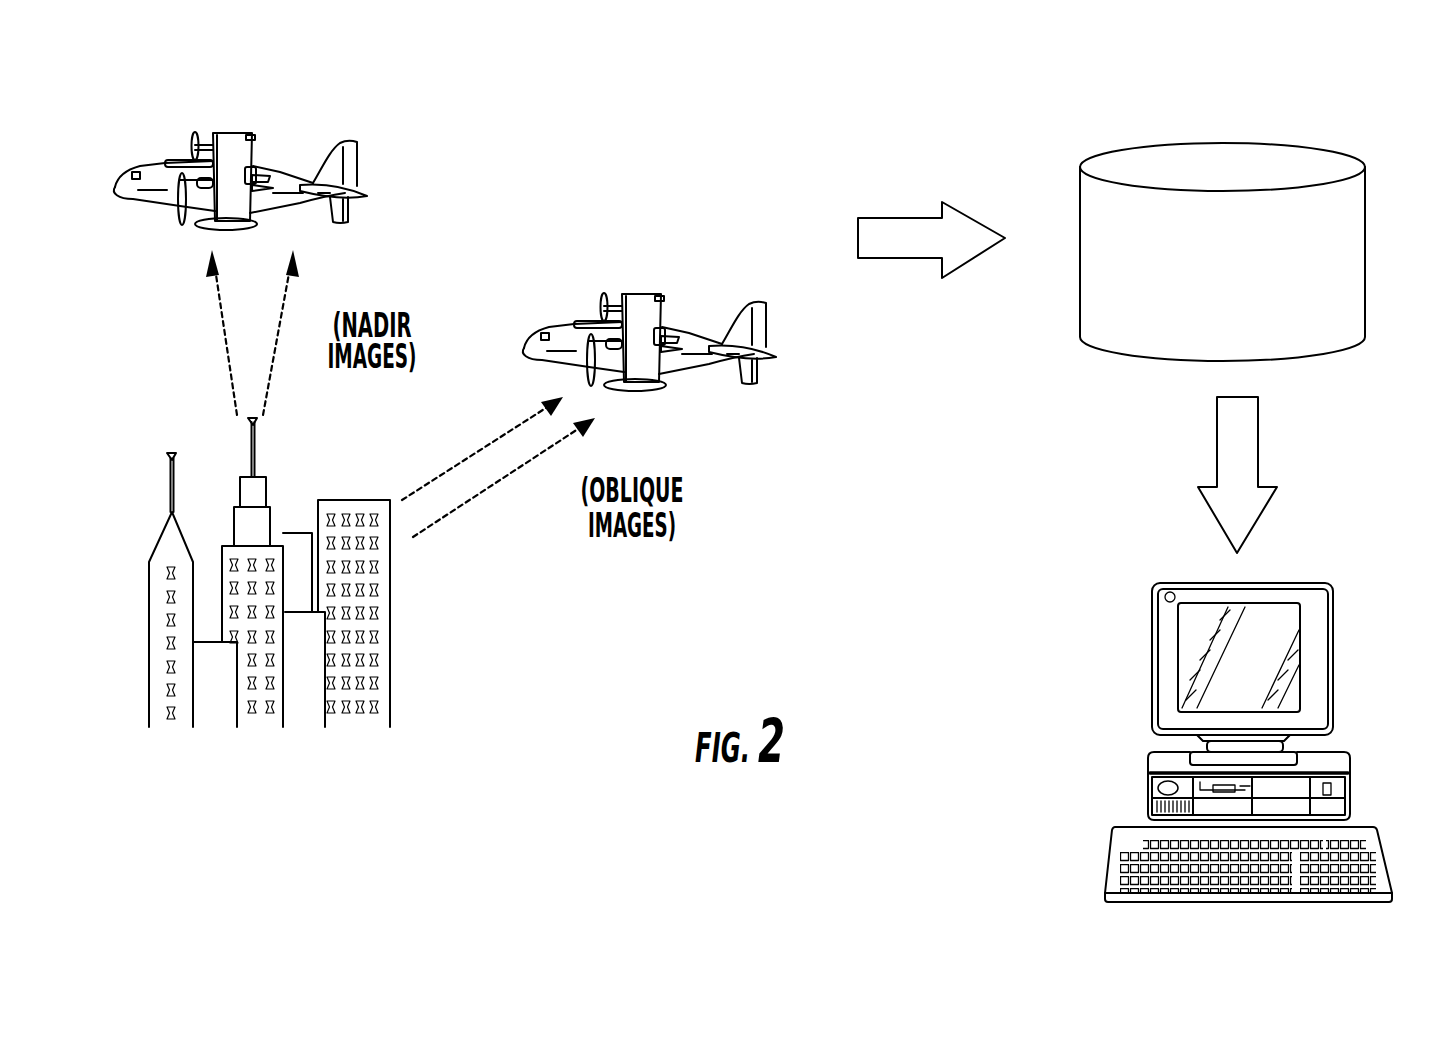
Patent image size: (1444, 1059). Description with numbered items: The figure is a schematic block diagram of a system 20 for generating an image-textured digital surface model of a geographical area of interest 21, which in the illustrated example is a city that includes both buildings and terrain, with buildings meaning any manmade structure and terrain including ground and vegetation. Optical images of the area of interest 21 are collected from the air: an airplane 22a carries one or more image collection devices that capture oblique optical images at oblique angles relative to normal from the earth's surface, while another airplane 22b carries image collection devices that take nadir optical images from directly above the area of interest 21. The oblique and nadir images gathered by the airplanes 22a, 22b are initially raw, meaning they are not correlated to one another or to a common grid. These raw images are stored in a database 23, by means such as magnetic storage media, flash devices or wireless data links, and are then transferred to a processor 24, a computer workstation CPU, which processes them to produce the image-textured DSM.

The system 20 is at (1297, 95).
The geographical area of interest 21 is at (155, 488).
The airplane 22a is at (644, 291).
The airplane 22b is at (235, 130).
The database 23 is at (1365, 260).
The processor 24 is at (1309, 583).